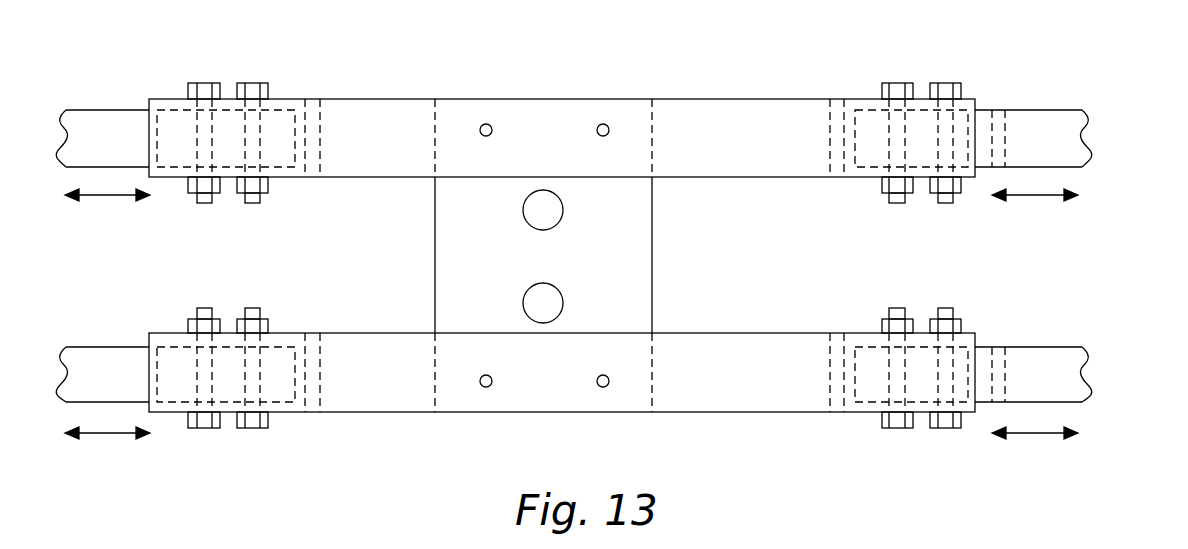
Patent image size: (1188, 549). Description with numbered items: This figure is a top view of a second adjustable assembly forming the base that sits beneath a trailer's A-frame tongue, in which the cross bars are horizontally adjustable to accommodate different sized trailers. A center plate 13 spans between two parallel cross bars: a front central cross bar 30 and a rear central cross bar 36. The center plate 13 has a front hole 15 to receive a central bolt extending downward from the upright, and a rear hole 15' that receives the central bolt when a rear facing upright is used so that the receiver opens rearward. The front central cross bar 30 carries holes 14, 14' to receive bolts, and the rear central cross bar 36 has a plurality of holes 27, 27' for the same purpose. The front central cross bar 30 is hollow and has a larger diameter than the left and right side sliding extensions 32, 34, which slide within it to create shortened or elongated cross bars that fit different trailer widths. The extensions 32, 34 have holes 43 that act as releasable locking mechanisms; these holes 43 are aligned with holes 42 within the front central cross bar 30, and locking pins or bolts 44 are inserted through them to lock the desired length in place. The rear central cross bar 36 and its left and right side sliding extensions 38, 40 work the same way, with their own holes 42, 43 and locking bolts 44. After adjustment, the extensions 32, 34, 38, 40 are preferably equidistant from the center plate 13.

The center plate 13 is at (642, 258).
The hole 14 is at (462, 411).
The hole 14' is at (572, 411).
The front hole 15 is at (560, 292).
The rear hole 15' is at (525, 221).
The hole 27 is at (504, 84).
The hole 27' is at (625, 84).
The front central cross bar 30 is at (747, 412).
The left side sliding extension 32 is at (1062, 352).
The right side sliding extension 34 is at (95, 347).
The rear central cross bar 36 is at (692, 99).
The left side sliding extension 38 is at (1073, 110).
The right side sliding extension 40 is at (108, 108).
The holes 42 is at (320, 117).
The holes 43 is at (953, 118).
The locking pins or bolts 44 is at (267, 90).